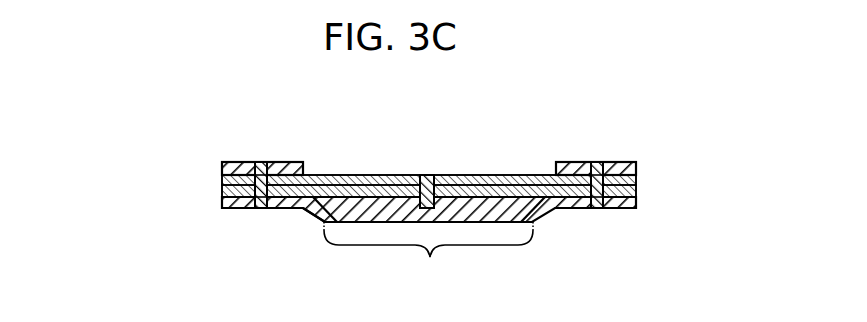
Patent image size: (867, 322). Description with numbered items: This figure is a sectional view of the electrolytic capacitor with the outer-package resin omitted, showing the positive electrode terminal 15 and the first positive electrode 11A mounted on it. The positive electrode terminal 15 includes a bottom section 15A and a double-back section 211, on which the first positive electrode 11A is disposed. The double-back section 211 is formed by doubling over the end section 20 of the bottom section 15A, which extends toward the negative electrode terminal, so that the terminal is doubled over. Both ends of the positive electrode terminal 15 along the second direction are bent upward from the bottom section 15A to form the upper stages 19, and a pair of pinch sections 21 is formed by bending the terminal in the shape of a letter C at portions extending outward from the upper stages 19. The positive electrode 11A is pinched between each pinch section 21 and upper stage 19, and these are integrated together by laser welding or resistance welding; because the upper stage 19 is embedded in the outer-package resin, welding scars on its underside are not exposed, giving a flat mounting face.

The first positive electrode 11A is at (473, 196).
The positive electrode terminal 15 is at (307, 224).
The bottom section 15A is at (402, 212).
The positive electrode terminal upper stage 19 is at (242, 205).
The end section 20 is at (363, 195).
The pinch section 21 is at (237, 162).
The double-back section 211 is at (428, 253).